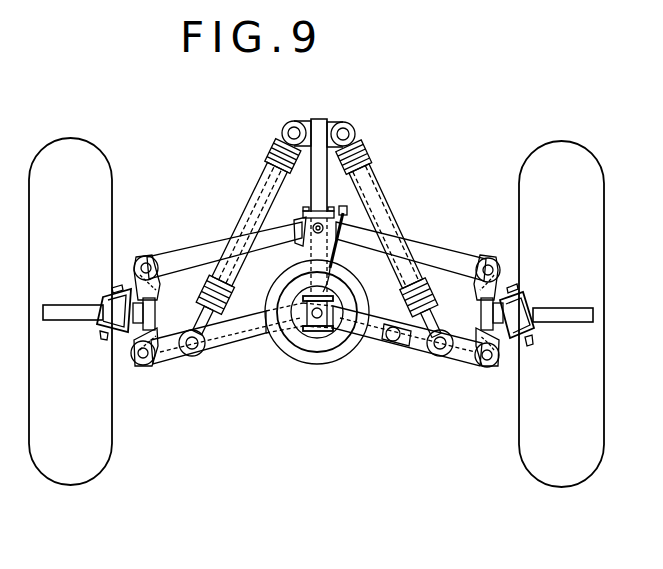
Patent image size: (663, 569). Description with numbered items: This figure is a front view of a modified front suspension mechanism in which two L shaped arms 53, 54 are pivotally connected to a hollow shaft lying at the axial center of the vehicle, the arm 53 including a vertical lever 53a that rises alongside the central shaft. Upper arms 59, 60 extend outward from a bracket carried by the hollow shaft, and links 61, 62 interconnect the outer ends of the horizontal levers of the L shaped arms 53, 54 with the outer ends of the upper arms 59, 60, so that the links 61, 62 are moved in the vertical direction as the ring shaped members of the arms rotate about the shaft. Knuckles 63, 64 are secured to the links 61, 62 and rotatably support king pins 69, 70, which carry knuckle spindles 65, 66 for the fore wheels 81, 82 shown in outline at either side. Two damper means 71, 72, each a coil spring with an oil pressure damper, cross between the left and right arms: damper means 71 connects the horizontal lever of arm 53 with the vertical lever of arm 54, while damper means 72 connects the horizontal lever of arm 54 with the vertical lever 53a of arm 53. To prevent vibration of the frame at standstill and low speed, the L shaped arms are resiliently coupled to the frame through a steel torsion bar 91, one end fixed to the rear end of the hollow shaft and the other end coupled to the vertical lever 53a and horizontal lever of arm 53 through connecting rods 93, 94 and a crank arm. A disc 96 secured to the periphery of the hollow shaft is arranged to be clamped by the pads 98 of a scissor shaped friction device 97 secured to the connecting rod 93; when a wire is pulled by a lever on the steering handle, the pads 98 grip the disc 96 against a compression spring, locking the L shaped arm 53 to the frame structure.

The L shaped arm 53 is at (452, 364).
The vertical lever 53a is at (321, 119).
The L shaped arm 54 is at (219, 356).
The upper arm 59 is at (462, 253).
The upper arm 60 is at (180, 253).
The link 61 is at (480, 310).
The link 62 is at (157, 312).
The knuckle 63 is at (513, 343).
The knuckle 64 is at (115, 337).
The knuckle spindle 65 is at (580, 323).
The knuckle spindle 66 is at (61, 322).
The king pin 69 is at (525, 293).
The king pin 70 is at (107, 295).
The damper means 71 is at (402, 193).
The damper means 72 is at (233, 212).
The wheel (right) 81 is at (575, 141).
The wheel (left) 82 is at (62, 138).
The torsion bar 91 is at (315, 332).
The connecting rod 93 is at (311, 214).
The connecting rod 94 is at (387, 350).
The disc 96 is at (272, 353).
The friction device 97 is at (345, 258).
The pads 98 is at (362, 290).